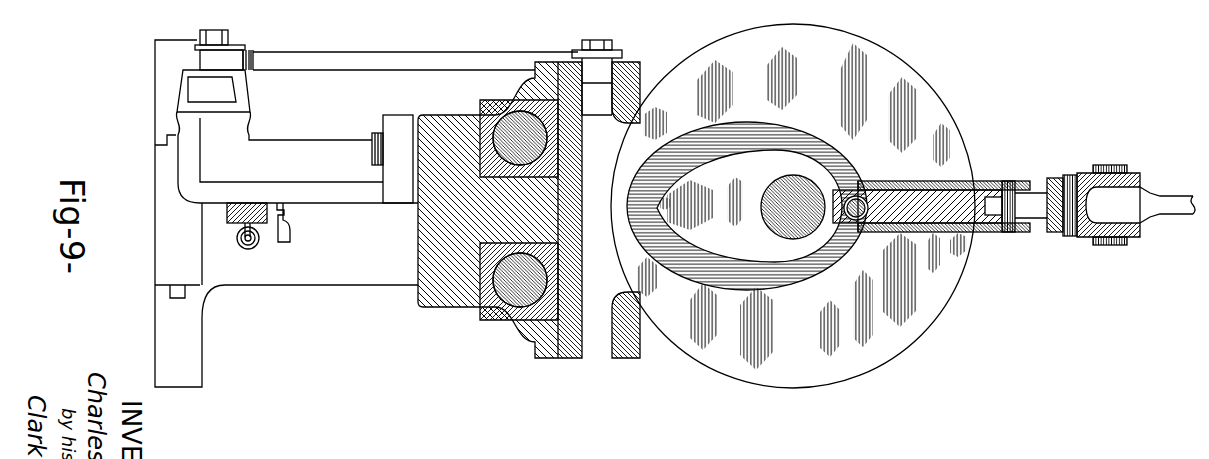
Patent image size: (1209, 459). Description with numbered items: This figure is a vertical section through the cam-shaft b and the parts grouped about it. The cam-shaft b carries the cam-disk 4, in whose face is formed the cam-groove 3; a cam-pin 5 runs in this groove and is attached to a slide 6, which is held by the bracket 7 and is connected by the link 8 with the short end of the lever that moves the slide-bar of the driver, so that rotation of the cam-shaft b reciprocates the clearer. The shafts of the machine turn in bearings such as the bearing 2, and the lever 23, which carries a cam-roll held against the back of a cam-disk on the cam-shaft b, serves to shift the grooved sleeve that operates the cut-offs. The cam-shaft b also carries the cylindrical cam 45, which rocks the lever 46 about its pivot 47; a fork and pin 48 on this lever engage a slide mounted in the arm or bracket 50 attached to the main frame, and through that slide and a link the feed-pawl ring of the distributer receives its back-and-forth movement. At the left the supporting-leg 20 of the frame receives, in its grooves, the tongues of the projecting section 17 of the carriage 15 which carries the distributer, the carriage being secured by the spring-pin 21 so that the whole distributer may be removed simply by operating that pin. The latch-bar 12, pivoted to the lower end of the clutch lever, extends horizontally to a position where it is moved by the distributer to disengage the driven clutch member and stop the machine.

The bearing 2 is at (1172, 228).
The cam-groove 3 is at (745, 280).
The cam-disk 4 is at (772, 347).
The cam-pin 5 is at (868, 178).
The slide 6 is at (907, 207).
The bracket 7 is at (992, 250).
The link 8 is at (1040, 192).
The latch-bar 12 is at (232, 226).
The carriage 15 is at (256, 247).
The projecting section 17 is at (286, 213).
The supporting-leg 20 is at (465, 210).
The spring-pin 21 is at (443, 297).
The lever 23 is at (492, 320).
The cylindrical cam 45 is at (213, 91).
The lever 46 is at (354, 63).
The pivot 47 is at (602, 65).
The fork and pin 48 is at (216, 40).
The arm or bracket 50 is at (224, 110).
The cam-shaft b is at (771, 214).